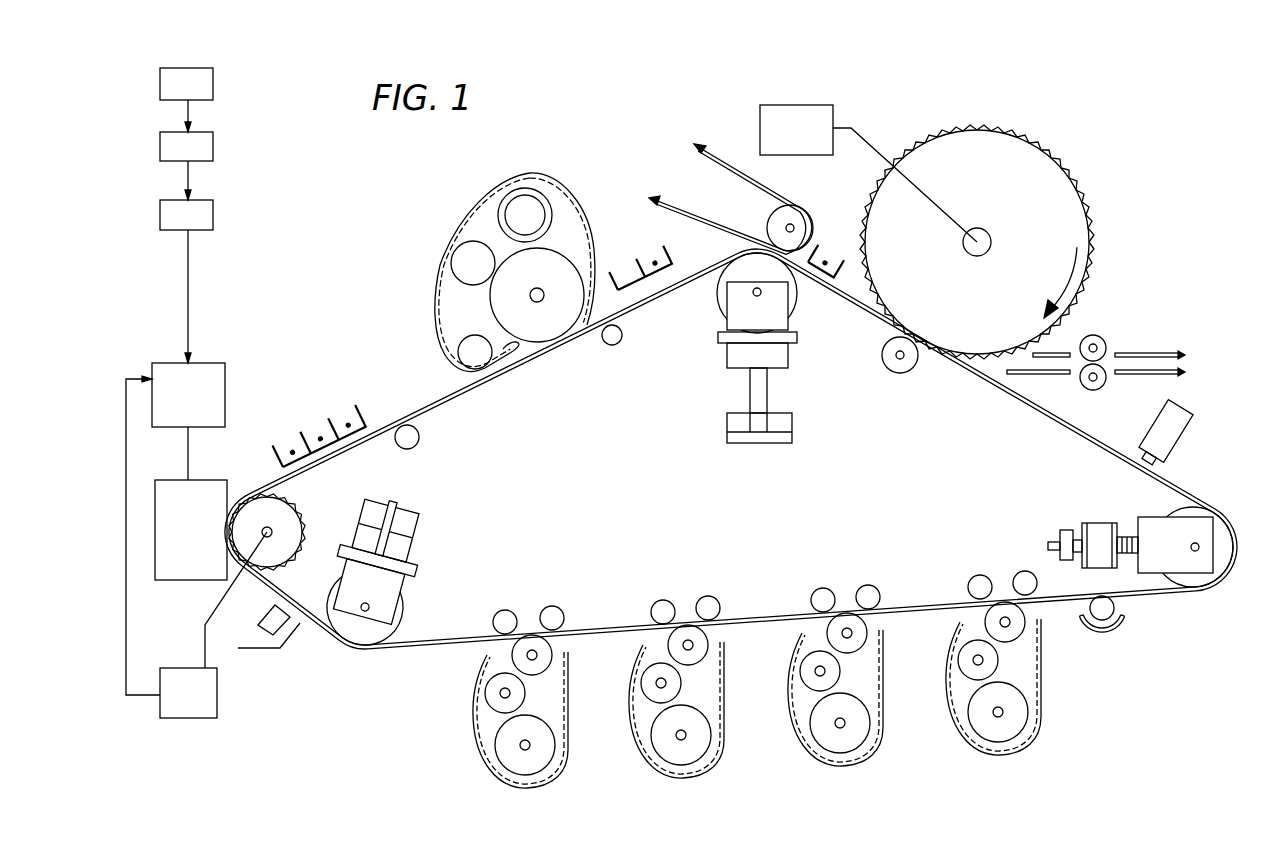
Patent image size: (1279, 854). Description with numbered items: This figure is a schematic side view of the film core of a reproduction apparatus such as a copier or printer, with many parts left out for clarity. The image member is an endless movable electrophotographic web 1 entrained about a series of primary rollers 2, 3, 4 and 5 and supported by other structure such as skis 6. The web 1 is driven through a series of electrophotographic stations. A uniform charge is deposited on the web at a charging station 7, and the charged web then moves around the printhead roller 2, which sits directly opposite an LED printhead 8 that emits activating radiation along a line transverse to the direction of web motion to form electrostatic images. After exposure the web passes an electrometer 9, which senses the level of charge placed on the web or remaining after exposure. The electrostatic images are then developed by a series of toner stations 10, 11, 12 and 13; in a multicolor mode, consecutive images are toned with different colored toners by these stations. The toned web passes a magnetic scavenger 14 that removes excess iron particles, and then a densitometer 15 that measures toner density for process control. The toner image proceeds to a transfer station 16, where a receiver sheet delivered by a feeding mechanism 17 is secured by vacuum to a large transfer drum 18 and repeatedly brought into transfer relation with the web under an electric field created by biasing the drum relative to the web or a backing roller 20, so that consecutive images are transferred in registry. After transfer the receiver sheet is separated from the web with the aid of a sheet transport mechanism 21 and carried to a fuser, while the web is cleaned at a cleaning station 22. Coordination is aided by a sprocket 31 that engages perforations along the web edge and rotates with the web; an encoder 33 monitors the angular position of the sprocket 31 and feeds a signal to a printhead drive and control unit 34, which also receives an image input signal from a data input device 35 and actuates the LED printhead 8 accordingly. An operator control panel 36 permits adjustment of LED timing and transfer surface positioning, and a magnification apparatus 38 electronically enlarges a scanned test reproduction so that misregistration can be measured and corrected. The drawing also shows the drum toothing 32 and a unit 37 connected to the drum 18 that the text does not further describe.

The electrophotographic web 1 is at (440, 648).
The printhead roller 2 is at (255, 512).
The primary roller 3 is at (345, 648).
The primary roller 4 is at (1222, 535).
The primary roller 5 is at (745, 268).
The skis 6 is at (416, 446).
The charging station 7 is at (330, 422).
The LED printhead 8 is at (155, 482).
The electrometer 9 is at (265, 650).
The toner station 10 is at (568, 740).
The toner station 11 is at (724, 730).
The toner station 12 is at (883, 718).
The toner station 13 is at (1041, 708).
The magnetic scavenger 14 is at (1118, 625).
The densitometer 15 is at (1193, 420).
The transfer station 16 is at (1082, 322).
The feeding mechanism 17 is at (1097, 390).
The transfer drum 18 is at (1078, 203).
The backing roller 20 is at (892, 372).
The sheet transport mechanism 21 is at (707, 215).
The cleaning station 22 is at (613, 252).
The sprocket 31 is at (305, 497).
The drum teeth 32 is at (1040, 145).
The encoder 33 is at (205, 718).
The printhead drive and control unit 34 is at (225, 372).
The data input device 35 is at (213, 148).
The operator control panel 36 is at (213, 84).
The drive unit 37 is at (833, 106).
The magnification apparatus 38 is at (213, 216).